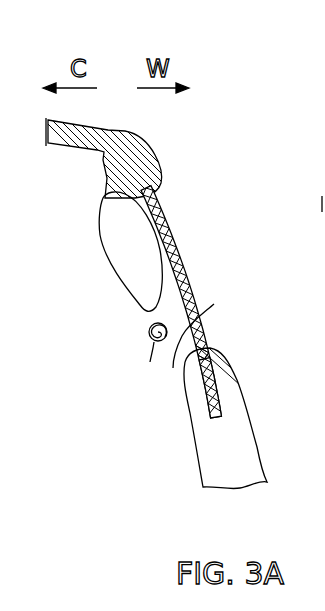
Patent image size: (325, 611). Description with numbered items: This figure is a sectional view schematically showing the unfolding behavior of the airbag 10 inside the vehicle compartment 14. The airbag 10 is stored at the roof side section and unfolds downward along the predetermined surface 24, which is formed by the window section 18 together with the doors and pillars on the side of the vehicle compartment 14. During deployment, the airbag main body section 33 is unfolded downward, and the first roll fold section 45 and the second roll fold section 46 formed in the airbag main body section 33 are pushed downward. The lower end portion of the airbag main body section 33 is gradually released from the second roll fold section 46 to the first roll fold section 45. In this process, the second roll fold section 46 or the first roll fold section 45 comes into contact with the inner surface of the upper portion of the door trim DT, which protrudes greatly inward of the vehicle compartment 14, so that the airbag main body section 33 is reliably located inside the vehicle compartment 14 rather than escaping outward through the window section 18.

The airbag 10 is at (80, 207).
The vehicle compartment 14 is at (63, 355).
The airbag main body section 33 is at (100, 243).
The window section 18 is at (178, 257).
The predetermined surface 24 is at (214, 304).
The door trim DT is at (191, 413).
The second roll fold section 46 is at (146, 331).
The first roll fold section 45 is at (153, 367).